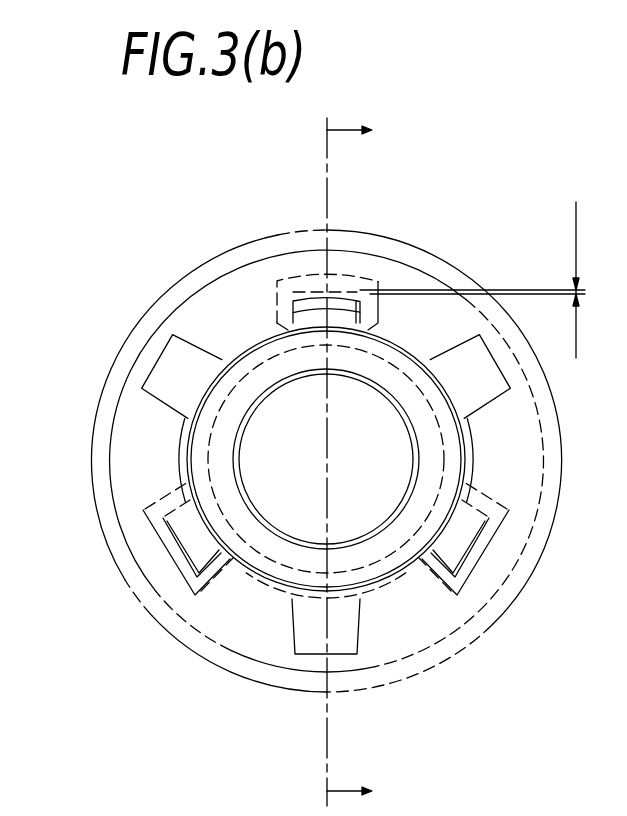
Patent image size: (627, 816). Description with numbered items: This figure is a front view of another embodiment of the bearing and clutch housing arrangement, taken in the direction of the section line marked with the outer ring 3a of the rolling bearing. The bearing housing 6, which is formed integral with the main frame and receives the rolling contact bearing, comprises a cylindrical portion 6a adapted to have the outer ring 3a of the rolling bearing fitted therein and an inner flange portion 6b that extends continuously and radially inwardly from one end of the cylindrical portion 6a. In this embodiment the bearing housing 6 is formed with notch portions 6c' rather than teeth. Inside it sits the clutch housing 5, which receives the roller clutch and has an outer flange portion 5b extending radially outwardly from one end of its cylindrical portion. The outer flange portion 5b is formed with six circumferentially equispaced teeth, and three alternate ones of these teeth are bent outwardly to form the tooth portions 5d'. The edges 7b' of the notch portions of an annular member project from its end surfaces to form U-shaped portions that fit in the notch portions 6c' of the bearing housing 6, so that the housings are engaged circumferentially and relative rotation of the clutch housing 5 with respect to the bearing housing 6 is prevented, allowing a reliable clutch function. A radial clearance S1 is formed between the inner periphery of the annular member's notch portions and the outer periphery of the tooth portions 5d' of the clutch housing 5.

The bearing housing 6 is at (324, 433).
The cylindrical portion 6a is at (206, 262).
The inner flange portion 6b is at (250, 278).
The notch portions 6c' is at (326, 385).
The edges of the notch portions 7b' is at (349, 252).
The clutch housing 5 is at (277, 474).
The outer flange portion 5b is at (306, 643).
The tooth portions 5d' is at (326, 435).
The radial clearance S1 is at (490, 280).
The outer ring 3a is at (371, 462).